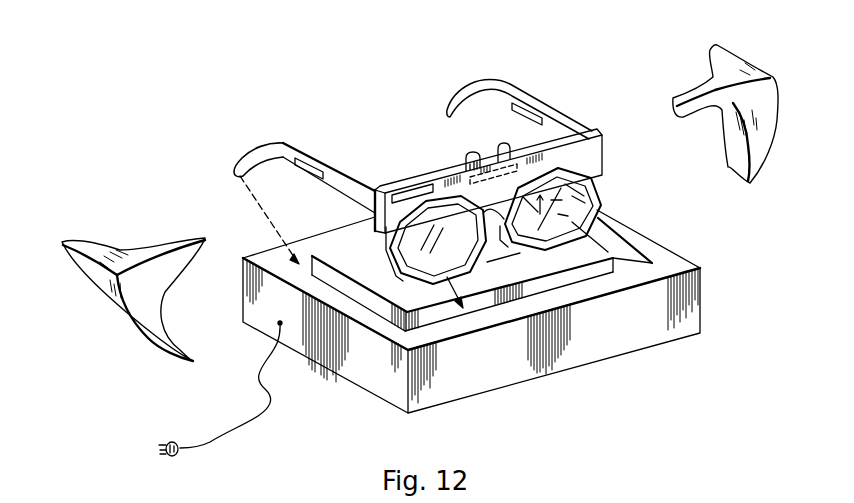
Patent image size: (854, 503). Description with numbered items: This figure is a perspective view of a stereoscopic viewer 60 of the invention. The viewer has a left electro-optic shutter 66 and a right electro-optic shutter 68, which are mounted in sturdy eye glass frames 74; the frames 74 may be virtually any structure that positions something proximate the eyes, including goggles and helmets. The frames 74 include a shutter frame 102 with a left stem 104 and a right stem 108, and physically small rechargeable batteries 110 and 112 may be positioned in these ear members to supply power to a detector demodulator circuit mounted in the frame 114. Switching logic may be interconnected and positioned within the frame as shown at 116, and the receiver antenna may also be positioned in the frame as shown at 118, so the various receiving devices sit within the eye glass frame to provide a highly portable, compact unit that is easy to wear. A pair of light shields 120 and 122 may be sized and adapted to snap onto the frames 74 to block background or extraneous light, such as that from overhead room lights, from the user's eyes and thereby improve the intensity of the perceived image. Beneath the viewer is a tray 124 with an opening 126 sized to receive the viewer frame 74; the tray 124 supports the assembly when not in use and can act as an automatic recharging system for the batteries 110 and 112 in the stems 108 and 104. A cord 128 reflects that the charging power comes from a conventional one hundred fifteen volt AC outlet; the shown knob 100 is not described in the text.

The stereoscopic viewing glasses 60 is at (466, 158).
The left electro-optic shutter 66 is at (528, 227).
The right electro-optic shutter 68 is at (455, 251).
The eye glass frames 74 is at (285, 143).
The control knob 100 is at (498, 143).
The shutter frame 102 is at (463, 158).
The left stem 104 is at (548, 114).
The right stem 108 is at (304, 159).
The battery 110 is at (308, 160).
The battery 112 is at (520, 97).
The frame 114 is at (406, 187).
The switching logic location 116 is at (535, 146).
The receiver antenna location 118 is at (478, 153).
The light shield 120 is at (755, 67).
The light shield 122 is at (83, 273).
The tray 124 is at (503, 368).
The opening 126 is at (578, 273).
The cord 128 is at (210, 443).